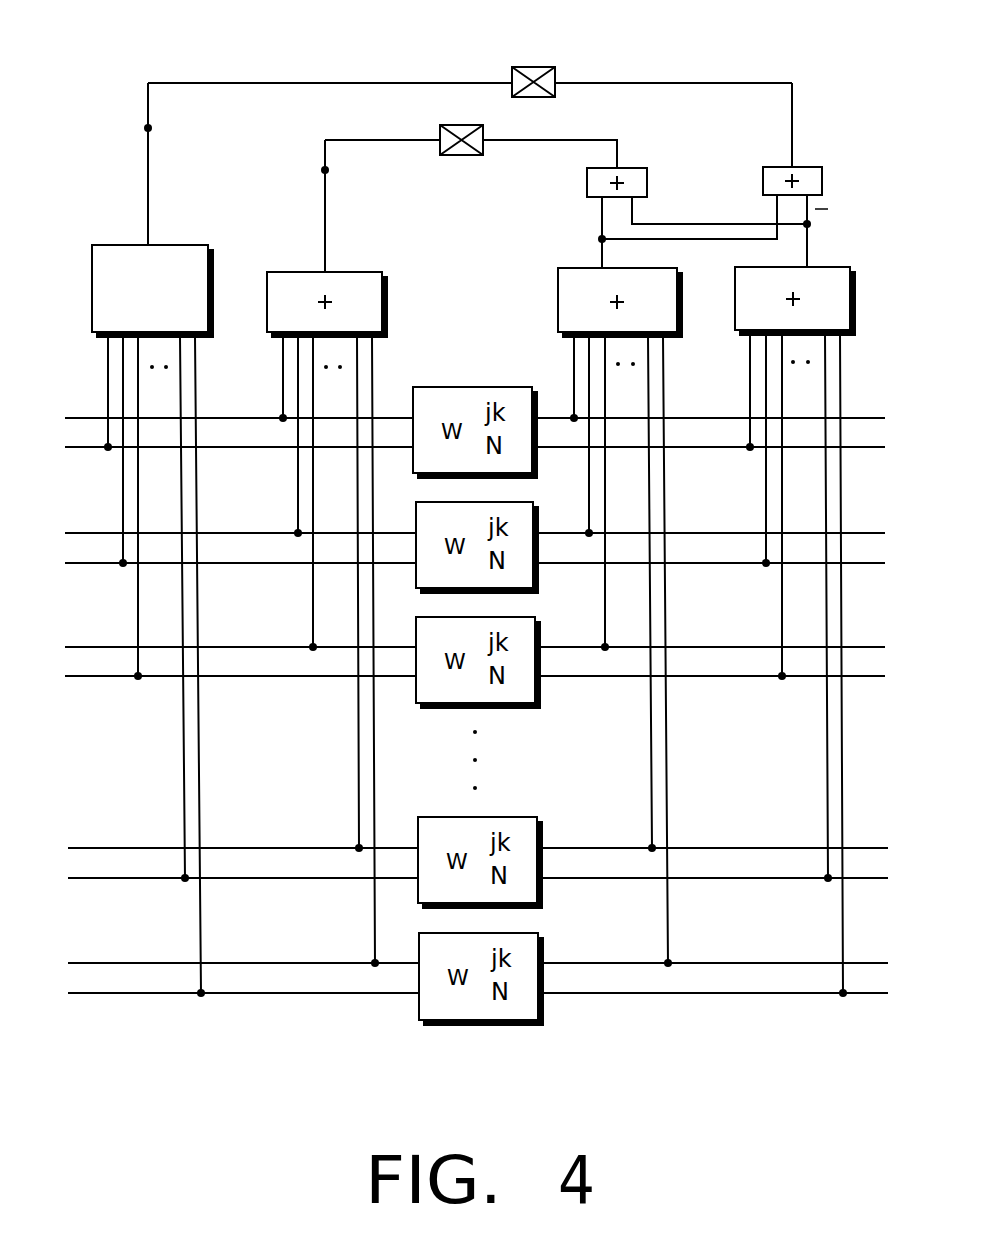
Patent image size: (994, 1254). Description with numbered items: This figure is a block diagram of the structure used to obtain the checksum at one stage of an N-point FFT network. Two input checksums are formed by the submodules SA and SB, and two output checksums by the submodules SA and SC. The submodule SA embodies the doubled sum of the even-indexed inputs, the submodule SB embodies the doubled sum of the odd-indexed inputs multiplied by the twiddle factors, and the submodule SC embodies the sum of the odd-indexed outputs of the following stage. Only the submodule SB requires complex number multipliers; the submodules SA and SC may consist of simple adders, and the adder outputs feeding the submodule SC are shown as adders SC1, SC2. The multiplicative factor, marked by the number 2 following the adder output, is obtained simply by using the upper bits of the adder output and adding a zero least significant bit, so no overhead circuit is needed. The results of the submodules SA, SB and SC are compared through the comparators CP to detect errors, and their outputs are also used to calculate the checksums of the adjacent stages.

The comparator CP is at (532, 65).
The multiplicative factor 2 is at (248, 177).
The submodule SB is at (177, 243).
The submodule SA is at (350, 270).
The adder SC1 is at (630, 166).
The adder SC2 is at (806, 166).
The submodule SC is at (837, 265).